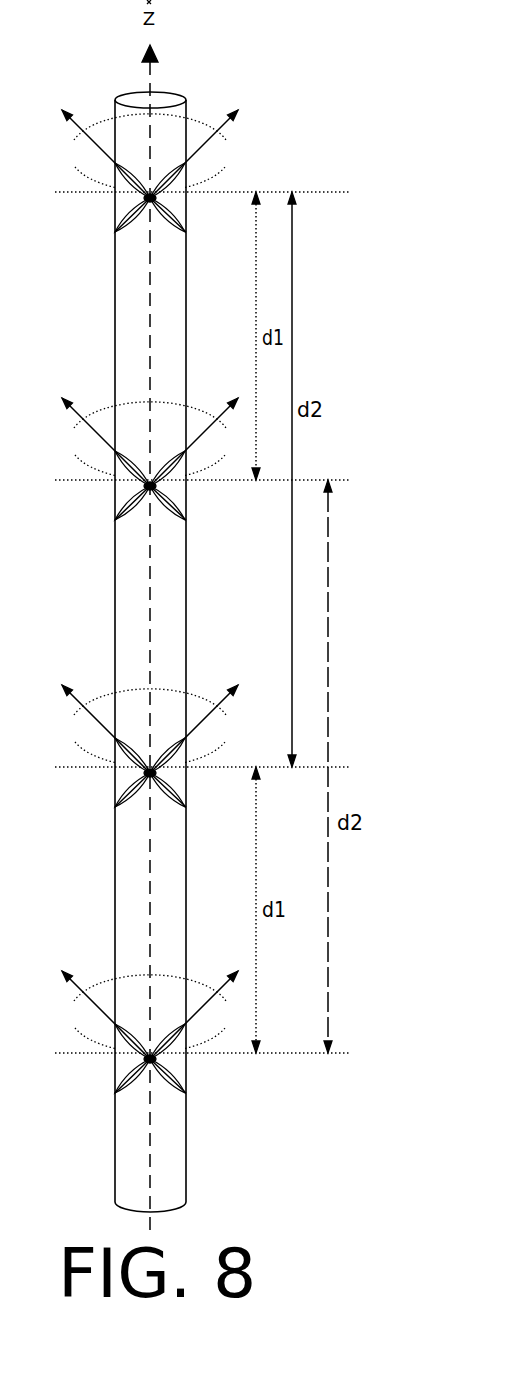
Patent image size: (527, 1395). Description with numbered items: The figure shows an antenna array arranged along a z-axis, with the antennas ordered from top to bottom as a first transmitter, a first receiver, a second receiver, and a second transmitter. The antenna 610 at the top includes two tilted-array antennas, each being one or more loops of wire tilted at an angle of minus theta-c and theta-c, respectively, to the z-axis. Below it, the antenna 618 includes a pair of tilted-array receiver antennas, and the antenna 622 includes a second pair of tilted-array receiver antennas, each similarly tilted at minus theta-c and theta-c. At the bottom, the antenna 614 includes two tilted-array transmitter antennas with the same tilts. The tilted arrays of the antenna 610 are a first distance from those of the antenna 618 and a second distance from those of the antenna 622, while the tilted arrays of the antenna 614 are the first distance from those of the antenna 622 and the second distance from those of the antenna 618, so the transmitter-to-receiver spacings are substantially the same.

The antenna 610 is at (82, 88).
The antenna 618 is at (75, 358).
The antenna 622 is at (75, 655).
The antenna 614 is at (78, 945).